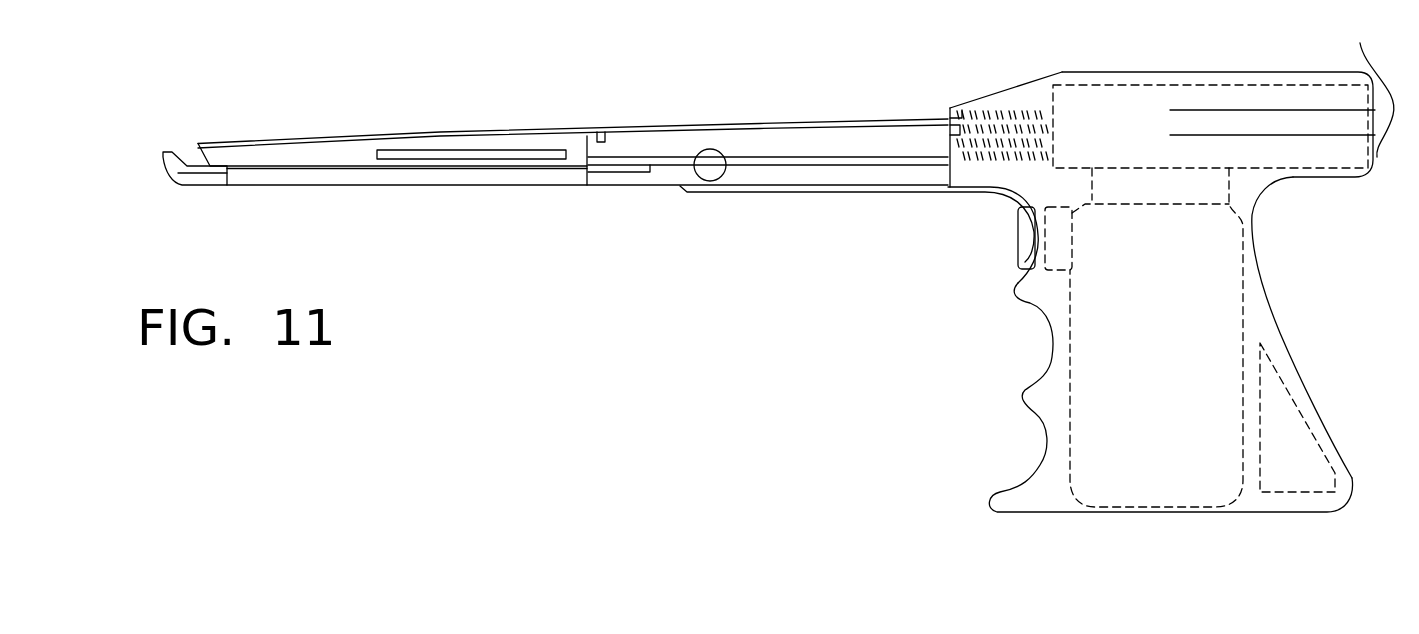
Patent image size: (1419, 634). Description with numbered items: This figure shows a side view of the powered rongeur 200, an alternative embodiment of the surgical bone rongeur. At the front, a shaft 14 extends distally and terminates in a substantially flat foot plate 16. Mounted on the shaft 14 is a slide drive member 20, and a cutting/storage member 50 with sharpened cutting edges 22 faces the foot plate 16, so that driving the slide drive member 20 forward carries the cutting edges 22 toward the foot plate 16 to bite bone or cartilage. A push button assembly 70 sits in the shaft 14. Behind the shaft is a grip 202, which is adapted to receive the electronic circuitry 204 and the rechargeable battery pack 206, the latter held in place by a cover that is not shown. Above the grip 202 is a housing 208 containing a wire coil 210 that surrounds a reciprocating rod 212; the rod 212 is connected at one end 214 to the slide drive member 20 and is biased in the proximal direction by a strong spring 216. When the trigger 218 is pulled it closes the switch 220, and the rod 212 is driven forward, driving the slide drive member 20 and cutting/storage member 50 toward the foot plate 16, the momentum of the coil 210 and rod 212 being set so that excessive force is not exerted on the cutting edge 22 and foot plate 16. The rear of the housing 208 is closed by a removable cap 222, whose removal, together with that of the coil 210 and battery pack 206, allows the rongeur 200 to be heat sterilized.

The shaft 14 is at (837, 175).
The foot plate 16 is at (166, 174).
The slide drive member 20 is at (820, 145).
The cutting edge 22 is at (193, 143).
The cutting/storage member 50 is at (310, 155).
The push button assembly 70 is at (705, 152).
The powered rongeur 200 is at (983, 84).
The grip 202 is at (1010, 343).
The electronic circuitry 204 is at (1310, 455).
The rechargeable battery pack 206 is at (1193, 417).
The housing 208 is at (1192, 72).
The wire coil 210 is at (1100, 83).
The reciprocating rod 212 is at (1270, 113).
The end of rod 214 is at (960, 110).
The spring 216 is at (1010, 110).
The trigger 218 is at (1017, 240).
The switch 220 is at (1060, 247).
The cap 222 is at (1378, 80).